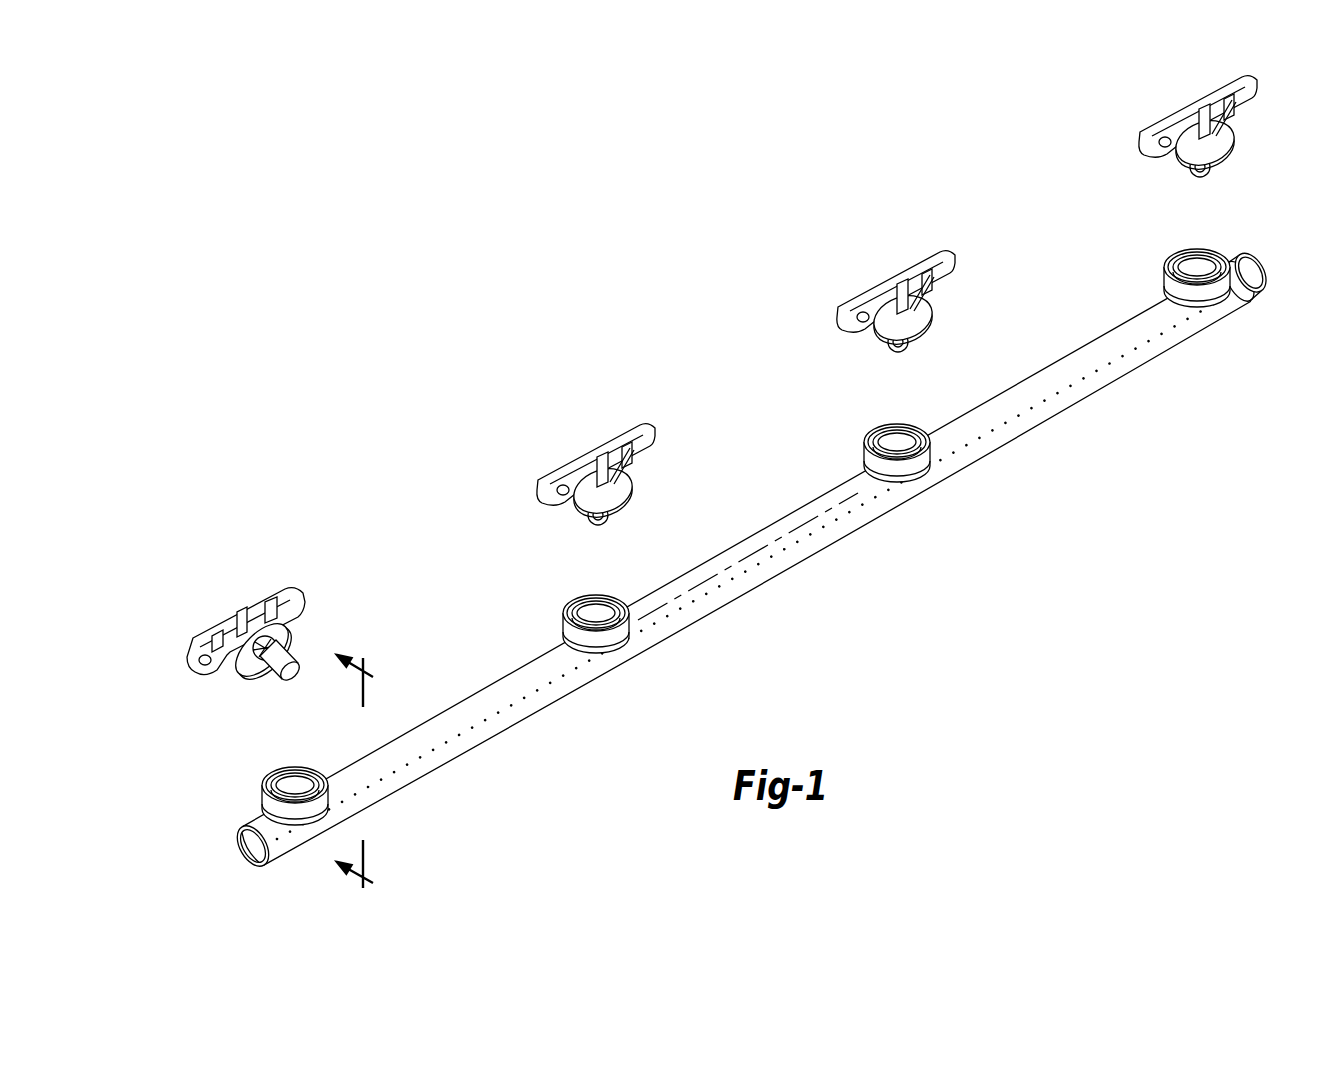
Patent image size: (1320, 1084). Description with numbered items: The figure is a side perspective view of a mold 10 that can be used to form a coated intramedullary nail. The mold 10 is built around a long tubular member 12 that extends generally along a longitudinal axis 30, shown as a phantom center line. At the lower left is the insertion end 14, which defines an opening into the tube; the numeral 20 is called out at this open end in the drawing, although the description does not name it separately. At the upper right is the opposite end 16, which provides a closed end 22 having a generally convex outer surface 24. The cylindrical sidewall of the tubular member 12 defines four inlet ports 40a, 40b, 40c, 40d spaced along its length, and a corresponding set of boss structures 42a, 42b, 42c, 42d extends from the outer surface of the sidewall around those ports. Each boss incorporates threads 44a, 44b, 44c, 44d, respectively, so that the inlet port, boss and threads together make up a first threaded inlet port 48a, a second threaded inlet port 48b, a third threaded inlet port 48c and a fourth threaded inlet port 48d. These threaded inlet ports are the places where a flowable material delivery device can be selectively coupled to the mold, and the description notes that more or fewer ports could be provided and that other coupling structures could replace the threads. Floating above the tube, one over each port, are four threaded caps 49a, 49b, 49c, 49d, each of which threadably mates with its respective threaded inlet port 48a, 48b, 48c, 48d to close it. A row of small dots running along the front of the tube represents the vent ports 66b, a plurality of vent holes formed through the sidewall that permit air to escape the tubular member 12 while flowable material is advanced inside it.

The mold 10 is at (633, 348).
The tubular member 12 is at (975, 452).
The insertion end 14 is at (255, 866).
The opposite end 16 is at (1264, 295).
The inlet opening 20 is at (243, 846).
The closed end 22 is at (1264, 270).
The convex outer surface 24 is at (1261, 268).
The longitudinal axis 30 is at (746, 556).
The inlet port 40a is at (288, 766).
The inlet port 40b is at (591, 592).
The inlet port 40c is at (891, 420).
The inlet port 40d is at (1193, 247).
The boss structure 42a is at (259, 805).
The boss structure 42b is at (562, 632).
The boss structure 42c is at (861, 460).
The boss structure 42d is at (1161, 286).
The threads 44a is at (300, 765).
The threads 44b is at (600, 590).
The threads 44c is at (900, 418).
The threads 44d is at (1201, 243).
The first threaded inlet port 48a is at (253, 776).
The second threaded inlet port 48b is at (555, 601).
The third threaded inlet port 48c is at (853, 429).
The fourth threaded inlet port 48d is at (1153, 254).
The threaded cap 49a is at (246, 621).
The threaded cap 49b is at (596, 467).
The threaded cap 49c is at (896, 298).
The threaded cap 49d is at (1197, 126).
The vent ports 66b is at (508, 712).